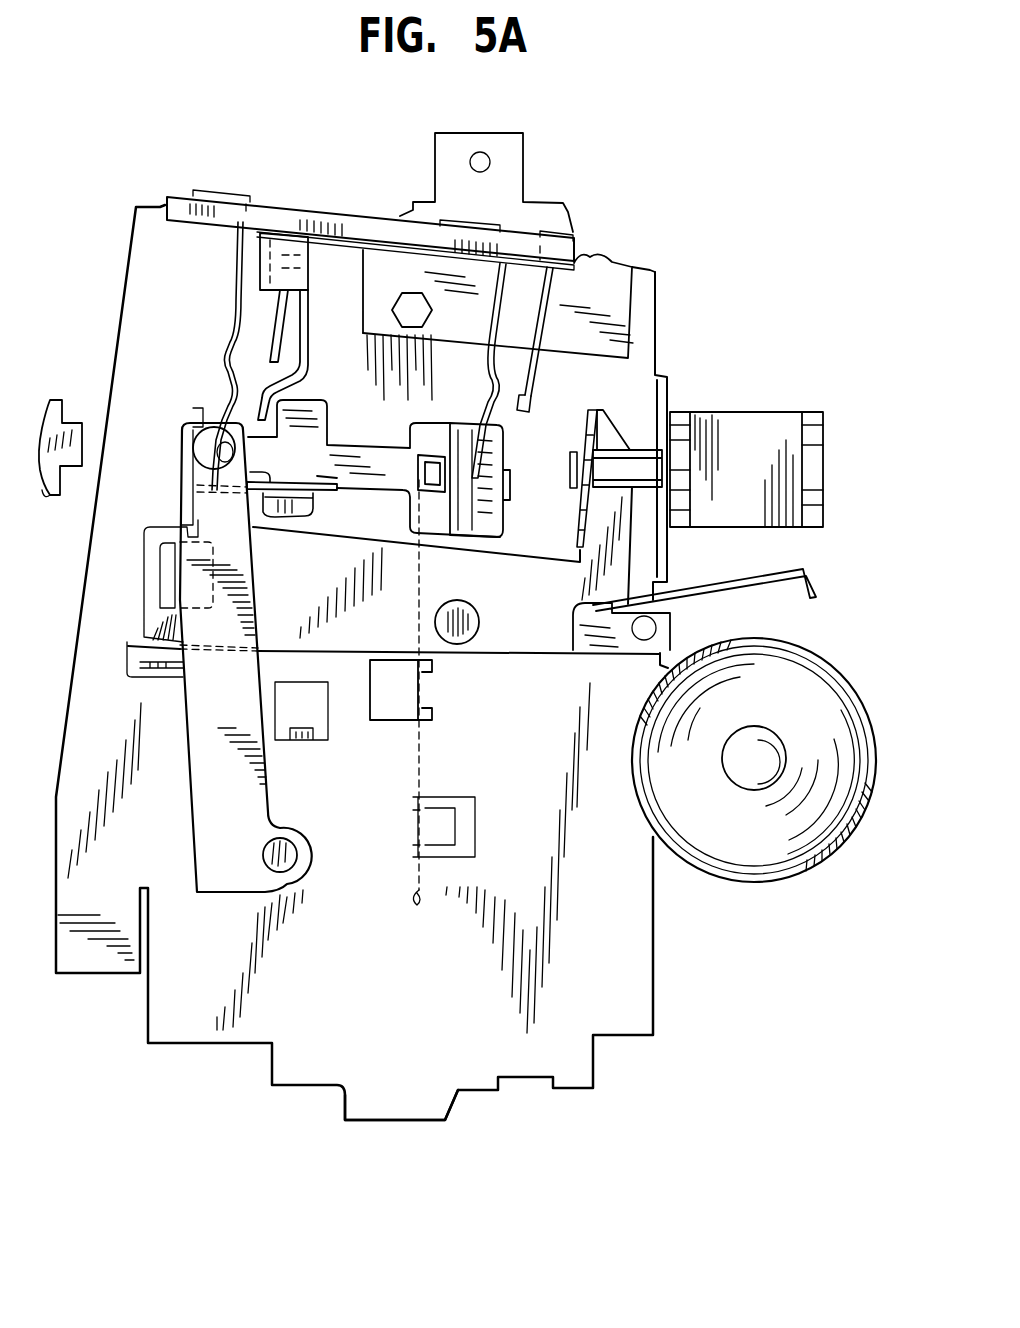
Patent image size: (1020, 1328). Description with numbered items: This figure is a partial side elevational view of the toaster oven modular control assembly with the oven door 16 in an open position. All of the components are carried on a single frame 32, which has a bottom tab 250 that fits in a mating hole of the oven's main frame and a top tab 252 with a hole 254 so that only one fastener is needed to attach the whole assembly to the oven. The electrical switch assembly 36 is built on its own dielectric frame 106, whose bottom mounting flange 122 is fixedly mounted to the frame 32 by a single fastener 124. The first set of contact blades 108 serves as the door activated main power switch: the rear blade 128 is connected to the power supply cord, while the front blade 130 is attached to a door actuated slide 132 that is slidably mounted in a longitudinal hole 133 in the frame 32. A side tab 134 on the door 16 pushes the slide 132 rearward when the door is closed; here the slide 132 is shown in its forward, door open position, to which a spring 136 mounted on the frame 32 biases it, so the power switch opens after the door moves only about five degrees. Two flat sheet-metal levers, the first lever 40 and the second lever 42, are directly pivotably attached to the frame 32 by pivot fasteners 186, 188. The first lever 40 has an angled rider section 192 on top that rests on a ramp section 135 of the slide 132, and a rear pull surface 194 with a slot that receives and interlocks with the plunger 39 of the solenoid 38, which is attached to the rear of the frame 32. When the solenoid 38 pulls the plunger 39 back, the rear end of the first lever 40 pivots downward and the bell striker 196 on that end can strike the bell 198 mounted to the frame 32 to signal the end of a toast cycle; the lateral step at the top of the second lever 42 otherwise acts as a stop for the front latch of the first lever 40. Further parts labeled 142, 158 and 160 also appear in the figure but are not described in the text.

The door 16 is at (58, 478).
The frame 32 is at (653, 980).
The electrical switch assembly 36 is at (358, 216).
The solenoid 38 is at (808, 412).
The plunger 39 is at (643, 450).
The first lever 40 is at (520, 655).
The second lever 42 is at (230, 898).
The frame 106 is at (290, 212).
The first set of contact blades 108 is at (515, 403).
The bottom mounting flange 122 is at (598, 262).
The fastener 124 is at (408, 292).
The rear blade 128 is at (536, 310).
The front blade 130 is at (483, 297).
The slide 132 is at (378, 446).
The longitudinal hole 133 is at (505, 490).
The side tab 134 is at (122, 453).
The ramp section 135 is at (300, 517).
The spring 136 is at (420, 717).
The spring wire 142 is at (233, 331).
The switch 158 is at (278, 308).
The actuator arm 160 is at (305, 335).
The pivot fastener 186 is at (480, 620).
The pivot fastener 188 is at (297, 853).
The angled rider section 192 is at (320, 490).
The pull surface 194 is at (585, 420).
The bell striker 196 is at (813, 595).
The bell 198 is at (833, 666).
The bottom tab 250 is at (382, 1110).
The top tab 252 is at (528, 140).
The hole 254 is at (481, 150).